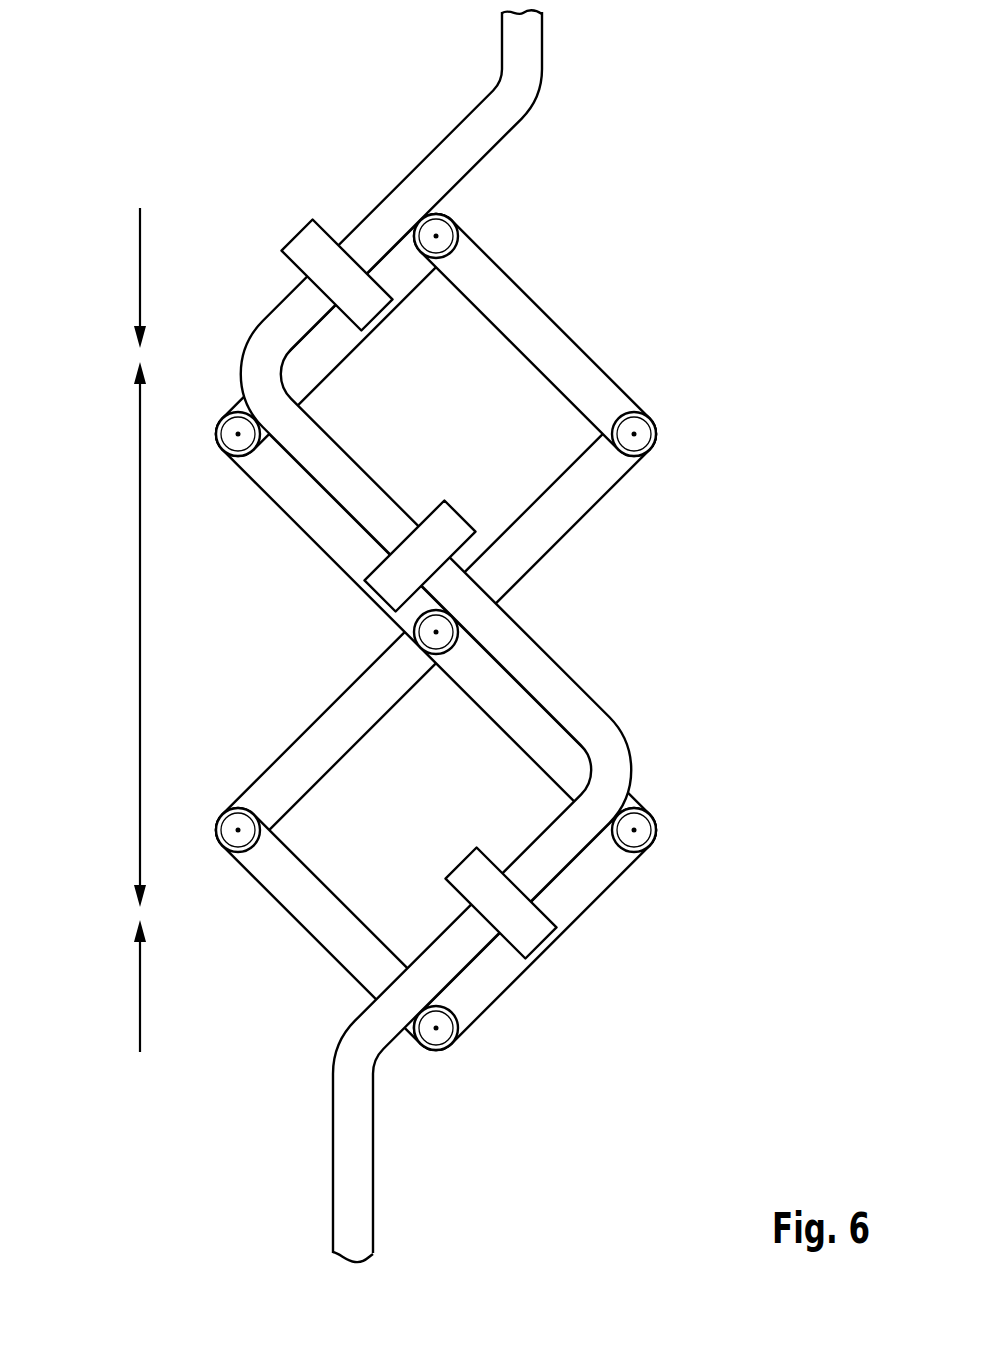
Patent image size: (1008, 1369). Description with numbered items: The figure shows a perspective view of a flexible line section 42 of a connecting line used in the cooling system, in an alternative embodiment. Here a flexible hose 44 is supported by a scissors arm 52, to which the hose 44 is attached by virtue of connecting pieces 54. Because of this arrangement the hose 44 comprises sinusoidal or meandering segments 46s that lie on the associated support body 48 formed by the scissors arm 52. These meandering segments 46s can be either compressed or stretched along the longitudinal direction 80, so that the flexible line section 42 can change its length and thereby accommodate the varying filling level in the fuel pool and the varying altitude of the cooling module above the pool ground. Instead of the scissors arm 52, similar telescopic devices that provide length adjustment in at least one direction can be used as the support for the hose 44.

The flexible line section 42 is at (543, 636).
The flexible hose 44 is at (544, 42).
The sinusoidal or meandering segments 46s is at (428, 153).
The support body 48 is at (540, 303).
The scissors arm 52 is at (445, 632).
The connecting pieces 54 is at (294, 238).
The longitudinal direction 80 is at (140, 580).